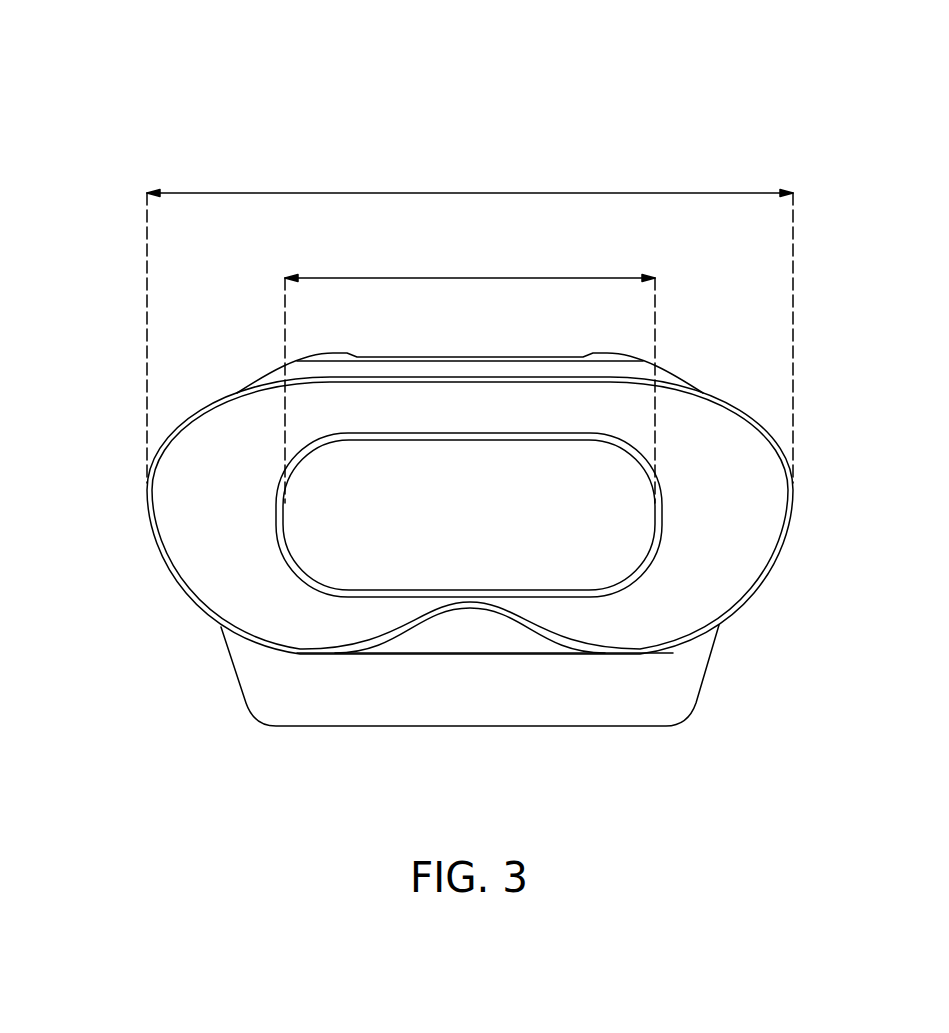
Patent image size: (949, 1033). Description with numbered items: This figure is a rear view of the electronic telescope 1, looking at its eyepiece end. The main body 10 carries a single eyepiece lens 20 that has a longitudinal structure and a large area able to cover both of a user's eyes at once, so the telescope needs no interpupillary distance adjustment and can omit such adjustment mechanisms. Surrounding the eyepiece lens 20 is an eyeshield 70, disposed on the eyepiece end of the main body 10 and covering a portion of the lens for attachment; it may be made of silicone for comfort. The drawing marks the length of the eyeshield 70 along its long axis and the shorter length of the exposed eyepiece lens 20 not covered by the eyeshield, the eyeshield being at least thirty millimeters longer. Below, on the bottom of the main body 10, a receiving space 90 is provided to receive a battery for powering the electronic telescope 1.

The electronic telescope 1 is at (934, 103).
The main body 10 is at (675, 378).
The eyepiece lens 20 is at (557, 563).
The eyeshield 70 is at (763, 513).
The receiving space 90 is at (363, 712).